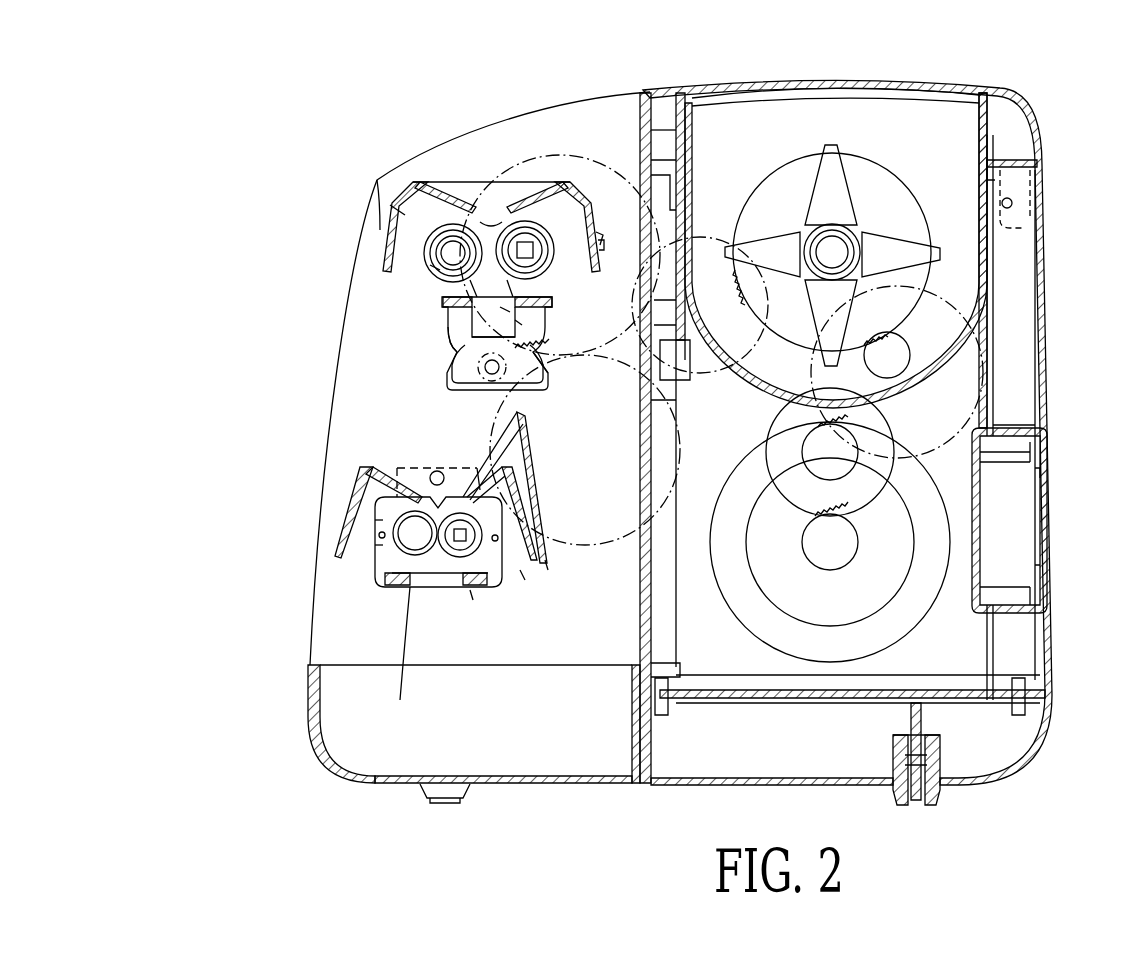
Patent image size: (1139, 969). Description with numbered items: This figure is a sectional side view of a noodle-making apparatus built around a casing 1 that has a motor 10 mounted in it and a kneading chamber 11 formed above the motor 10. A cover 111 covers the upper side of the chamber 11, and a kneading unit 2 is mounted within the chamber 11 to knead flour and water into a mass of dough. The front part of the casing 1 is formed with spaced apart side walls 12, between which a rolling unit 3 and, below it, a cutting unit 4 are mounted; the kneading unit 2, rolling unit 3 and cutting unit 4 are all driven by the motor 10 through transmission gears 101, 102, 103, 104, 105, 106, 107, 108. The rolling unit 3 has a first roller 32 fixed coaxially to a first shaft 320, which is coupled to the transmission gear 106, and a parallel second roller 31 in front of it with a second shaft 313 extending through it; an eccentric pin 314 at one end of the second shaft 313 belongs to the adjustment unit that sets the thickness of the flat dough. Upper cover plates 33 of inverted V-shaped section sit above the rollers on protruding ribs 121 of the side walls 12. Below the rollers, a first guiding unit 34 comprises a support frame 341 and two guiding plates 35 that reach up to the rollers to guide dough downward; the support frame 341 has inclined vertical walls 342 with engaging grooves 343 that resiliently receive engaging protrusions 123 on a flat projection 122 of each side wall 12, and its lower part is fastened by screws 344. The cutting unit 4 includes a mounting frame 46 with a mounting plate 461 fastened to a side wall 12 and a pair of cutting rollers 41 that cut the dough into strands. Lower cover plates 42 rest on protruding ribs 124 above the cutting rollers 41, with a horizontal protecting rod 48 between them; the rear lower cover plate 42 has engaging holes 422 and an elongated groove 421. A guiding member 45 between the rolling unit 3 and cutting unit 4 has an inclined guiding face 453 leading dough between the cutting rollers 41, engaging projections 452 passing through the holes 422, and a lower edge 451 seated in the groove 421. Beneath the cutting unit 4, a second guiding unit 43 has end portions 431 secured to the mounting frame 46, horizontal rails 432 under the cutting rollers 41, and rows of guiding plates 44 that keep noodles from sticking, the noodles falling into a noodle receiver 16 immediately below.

The casing 1 is at (1048, 135).
The kneading unit 2 is at (835, 190).
The rolling unit 3 is at (488, 212).
The cutting unit 4 is at (372, 560).
The motor 10 is at (817, 613).
The kneading chamber 11 is at (979, 243).
The side walls 12 is at (380, 230).
The noodle receiver 16 is at (318, 745).
The second roller 31 is at (400, 203).
The first roller 32 is at (525, 222).
The upper cover plates 33 is at (598, 235).
The first guiding unit 34 is at (430, 380).
The guiding plates 35 is at (430, 265).
The cutting rollers 41 is at (333, 558).
The lower cover plates 42 is at (633, 740).
The second guiding unit 43 is at (395, 595).
The guiding plates 44 is at (410, 587).
The guiding member 45 is at (676, 560).
The mounting frame 46 is at (360, 470).
The protecting rod 48 is at (397, 468).
The transmission gear 101 is at (960, 527).
The transmission gear 102 is at (960, 427).
The transmission gear 103 is at (993, 330).
The transmission gear 104 is at (893, 173).
The transmission gear 105 is at (690, 180).
The transmission gear 106 is at (555, 150).
The transmission gear 107 is at (500, 468).
The transmission gear 108 is at (378, 535).
The cover 111 is at (785, 100).
The protruding ribs 121 is at (640, 160).
The flat projection 122 is at (513, 327).
The engaging protrusions 123 is at (500, 307).
The protruding ribs 124 is at (375, 560).
The second shaft 313 is at (453, 250).
The eccentric pin 314 is at (450, 270).
The first shaft 320 is at (585, 200).
The support frame 341 is at (450, 372).
The vertical walls 342 is at (487, 317).
The engaging grooves 343 is at (465, 335).
The screws 344 is at (500, 392).
The elongated groove 421 is at (662, 705).
The engaging holes 422 is at (520, 570).
The end portions 431 is at (390, 592).
The horizontal rails 432 is at (308, 690).
The lower edge 451 is at (545, 560).
The engaging projections 452 is at (470, 590).
The inclined guiding face 453 is at (515, 413).
The mounting plate 461 is at (430, 478).